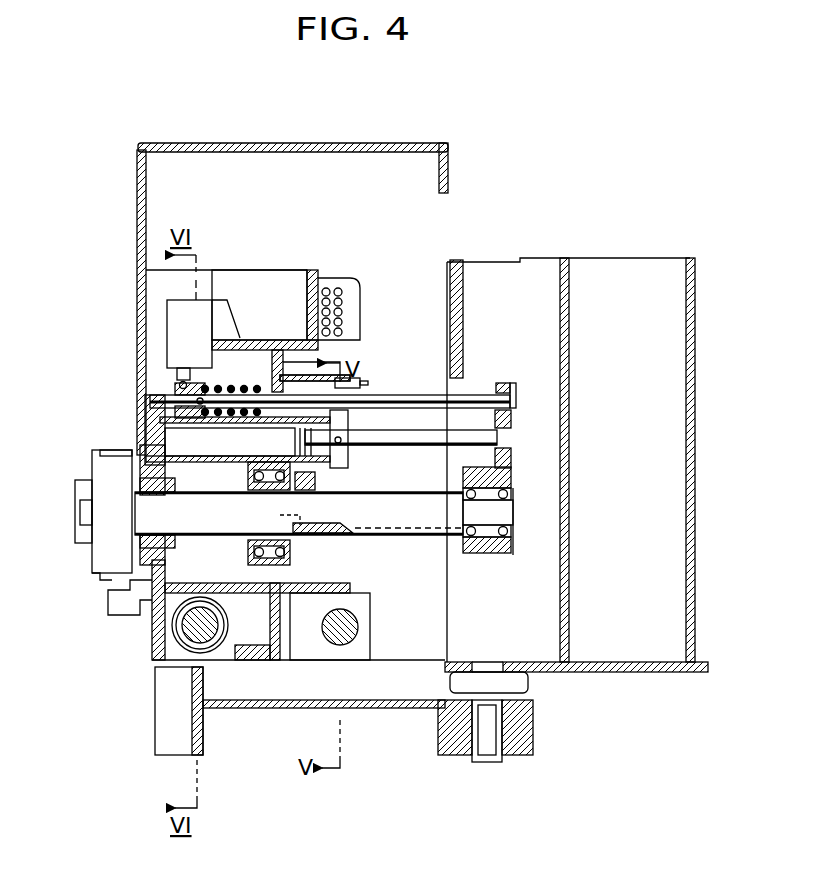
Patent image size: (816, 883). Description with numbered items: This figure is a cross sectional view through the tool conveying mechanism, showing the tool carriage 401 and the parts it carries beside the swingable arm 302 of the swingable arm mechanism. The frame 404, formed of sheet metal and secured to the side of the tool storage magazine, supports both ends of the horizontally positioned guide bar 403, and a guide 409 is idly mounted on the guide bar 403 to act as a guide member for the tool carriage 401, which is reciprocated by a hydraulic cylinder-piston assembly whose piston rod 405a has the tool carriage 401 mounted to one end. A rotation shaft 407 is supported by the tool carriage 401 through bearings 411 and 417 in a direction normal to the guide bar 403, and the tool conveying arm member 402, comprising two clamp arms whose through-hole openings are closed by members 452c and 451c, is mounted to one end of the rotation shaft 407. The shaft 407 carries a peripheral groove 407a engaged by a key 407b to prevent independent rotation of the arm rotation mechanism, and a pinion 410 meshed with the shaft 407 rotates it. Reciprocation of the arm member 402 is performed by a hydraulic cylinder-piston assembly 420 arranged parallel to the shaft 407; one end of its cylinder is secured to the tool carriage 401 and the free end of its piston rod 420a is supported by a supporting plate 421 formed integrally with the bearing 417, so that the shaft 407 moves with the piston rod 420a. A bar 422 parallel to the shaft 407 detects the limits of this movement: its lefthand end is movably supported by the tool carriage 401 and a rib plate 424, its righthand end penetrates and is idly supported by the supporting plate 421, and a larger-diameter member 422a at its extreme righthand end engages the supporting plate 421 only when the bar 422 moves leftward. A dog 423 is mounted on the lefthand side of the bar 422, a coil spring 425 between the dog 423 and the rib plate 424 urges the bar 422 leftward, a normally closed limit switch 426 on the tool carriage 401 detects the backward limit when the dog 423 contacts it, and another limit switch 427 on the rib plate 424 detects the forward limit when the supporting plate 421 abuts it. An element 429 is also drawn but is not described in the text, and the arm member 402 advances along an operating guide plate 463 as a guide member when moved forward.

The tool carriage 401 is at (138, 182).
The swingable arm 302 is at (569, 500).
The tool conveying arm member 402 is at (92, 470).
The guide bar 403 is at (205, 638).
The frame 404 is at (382, 708).
The piston rod 405a is at (358, 627).
The rotation shaft 407 is at (400, 536).
The groove 407a is at (338, 536).
The key 407b is at (293, 520).
The guide 409 is at (176, 632).
The pinion 410 is at (315, 482).
The bearing 411 is at (248, 476).
The bearing 417 is at (506, 542).
The hydraulic cylinder-piston assembly 420 is at (152, 415).
The piston rod 420a is at (392, 445).
The supporting plate 421 is at (507, 478).
The bar 422 is at (428, 395).
The member 422a is at (512, 390).
The dog 423 is at (200, 388).
The rib plate 424 is at (311, 360).
The coil spring 425 is at (232, 422).
The limit switch 426 is at (167, 320).
The limit switch 427 is at (360, 382).
The plate 429 is at (345, 404).
The member 451c is at (95, 576).
The member 452c is at (112, 450).
The operating guide plate 463 is at (108, 614).